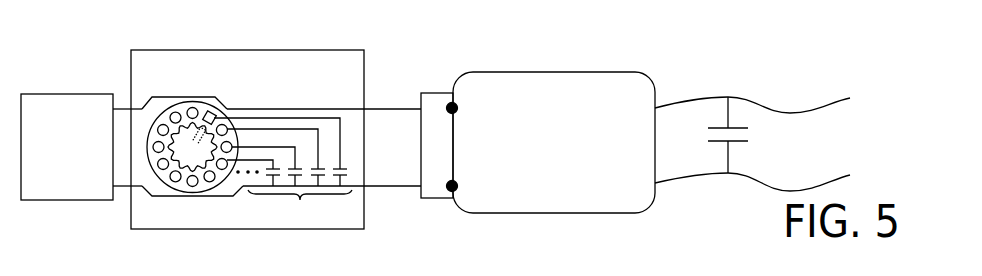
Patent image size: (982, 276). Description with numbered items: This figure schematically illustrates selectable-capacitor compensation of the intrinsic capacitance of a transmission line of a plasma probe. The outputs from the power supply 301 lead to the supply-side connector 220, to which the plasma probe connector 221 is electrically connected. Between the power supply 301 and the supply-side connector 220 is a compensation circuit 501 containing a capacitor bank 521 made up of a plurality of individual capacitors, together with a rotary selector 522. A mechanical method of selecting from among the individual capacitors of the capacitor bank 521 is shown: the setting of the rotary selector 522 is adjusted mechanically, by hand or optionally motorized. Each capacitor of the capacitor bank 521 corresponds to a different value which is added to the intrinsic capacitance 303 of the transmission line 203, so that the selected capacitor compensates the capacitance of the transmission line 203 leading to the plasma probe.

The power supply 301 is at (50, 93).
The tuning circuit 501 is at (300, 50).
The rotary selector 522 is at (195, 103).
The capacitor bank 521 is at (300, 212).
The supply-side connector 220 is at (440, 93).
The plasma probe connector 221 is at (500, 72).
The transmission line 203 is at (823, 103).
The intrinsic capacitance 303 is at (748, 128).